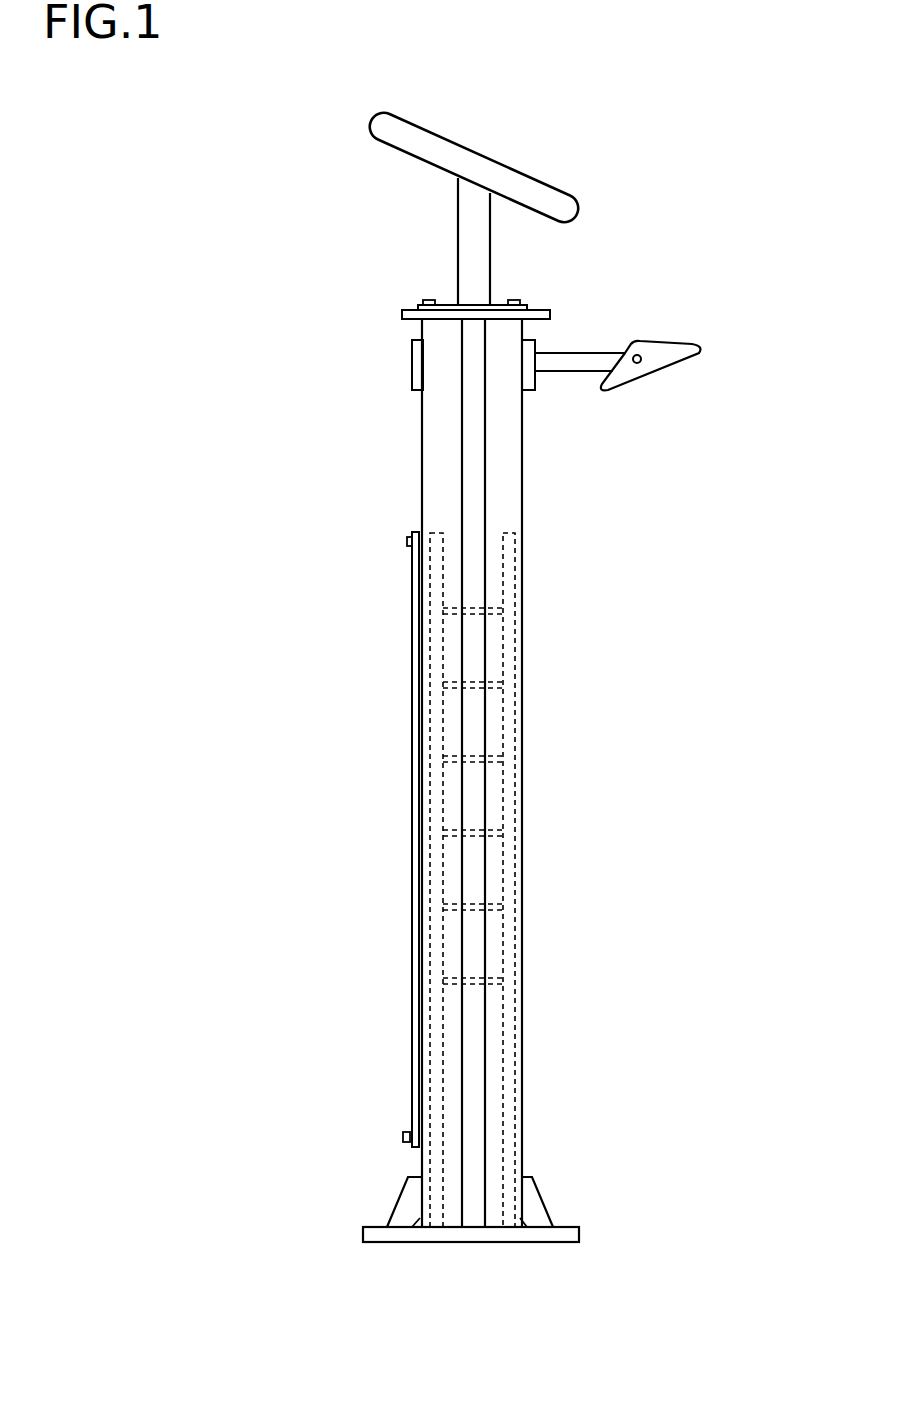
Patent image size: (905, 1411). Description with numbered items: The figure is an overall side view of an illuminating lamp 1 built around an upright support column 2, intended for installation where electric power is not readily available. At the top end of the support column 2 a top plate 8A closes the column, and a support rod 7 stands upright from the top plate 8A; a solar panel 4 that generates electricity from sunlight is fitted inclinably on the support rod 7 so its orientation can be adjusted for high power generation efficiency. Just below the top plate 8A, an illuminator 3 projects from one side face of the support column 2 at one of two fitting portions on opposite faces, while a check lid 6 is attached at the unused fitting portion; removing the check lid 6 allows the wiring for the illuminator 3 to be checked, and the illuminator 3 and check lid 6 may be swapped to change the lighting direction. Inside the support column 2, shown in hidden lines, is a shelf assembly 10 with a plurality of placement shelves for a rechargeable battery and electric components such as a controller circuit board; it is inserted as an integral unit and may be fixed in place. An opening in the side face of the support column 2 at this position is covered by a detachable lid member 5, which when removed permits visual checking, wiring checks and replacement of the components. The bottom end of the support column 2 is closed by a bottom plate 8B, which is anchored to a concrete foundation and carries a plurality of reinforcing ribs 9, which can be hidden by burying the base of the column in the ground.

The illuminating lamp 1 is at (682, 138).
The support column 2 is at (508, 468).
The illuminator 3 is at (687, 352).
The solar panel 4 is at (420, 142).
The lid member 5 is at (412, 718).
The check lid 6 is at (412, 363).
The support rod 7 is at (470, 253).
The top plate 8A is at (543, 315).
The bottom plate 8B is at (580, 1228).
The reinforcing ribs 9 is at (542, 1190).
The shelf assembly 10 is at (510, 573).